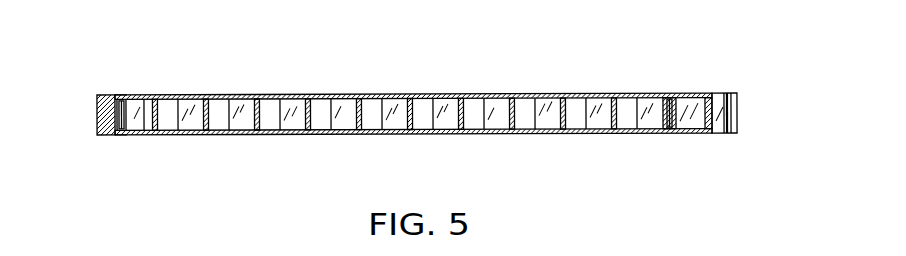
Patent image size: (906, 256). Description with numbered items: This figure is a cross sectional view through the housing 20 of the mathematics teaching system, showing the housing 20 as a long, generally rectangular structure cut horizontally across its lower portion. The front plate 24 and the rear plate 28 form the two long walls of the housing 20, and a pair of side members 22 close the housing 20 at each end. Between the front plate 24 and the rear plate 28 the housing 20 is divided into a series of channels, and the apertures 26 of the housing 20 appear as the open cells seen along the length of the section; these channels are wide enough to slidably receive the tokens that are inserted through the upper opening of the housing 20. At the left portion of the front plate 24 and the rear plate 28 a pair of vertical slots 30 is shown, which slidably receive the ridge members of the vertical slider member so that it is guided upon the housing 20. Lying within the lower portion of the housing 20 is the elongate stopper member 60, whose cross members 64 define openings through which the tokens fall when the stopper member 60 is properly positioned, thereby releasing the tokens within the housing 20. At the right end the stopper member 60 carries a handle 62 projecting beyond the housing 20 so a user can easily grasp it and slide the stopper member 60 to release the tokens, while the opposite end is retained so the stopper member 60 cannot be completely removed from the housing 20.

The housing 20 is at (500, 81).
The side members 22 is at (108, 118).
The front plate 24 is at (362, 94).
The apertures 26 is at (437, 94).
The rear plate 28 is at (308, 122).
The vertical slots 30 is at (127, 94).
The stopper member 60 is at (668, 100).
The handle 62 is at (737, 124).
The cross members 64 is at (589, 108).